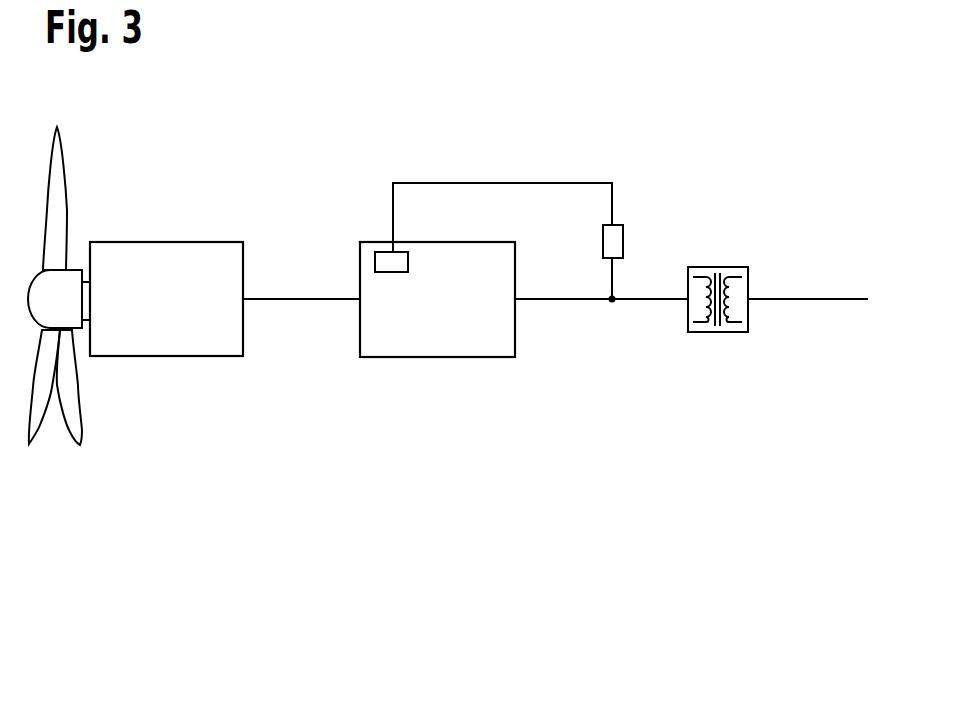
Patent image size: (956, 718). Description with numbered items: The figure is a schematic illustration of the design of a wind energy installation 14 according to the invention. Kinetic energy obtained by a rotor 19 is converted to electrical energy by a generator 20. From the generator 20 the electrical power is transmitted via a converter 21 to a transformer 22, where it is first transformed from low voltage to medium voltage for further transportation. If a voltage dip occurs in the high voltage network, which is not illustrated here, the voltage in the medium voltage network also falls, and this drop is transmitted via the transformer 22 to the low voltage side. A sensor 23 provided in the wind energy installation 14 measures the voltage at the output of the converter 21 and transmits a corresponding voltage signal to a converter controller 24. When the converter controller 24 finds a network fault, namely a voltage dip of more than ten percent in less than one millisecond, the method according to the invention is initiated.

The wind energy installation 14 is at (652, 356).
The rotor 19 is at (37, 407).
The generator 20 is at (167, 356).
The converter 21 is at (448, 357).
The transformer 22 is at (716, 267).
The sensor 23 is at (615, 225).
The converter controller 24 is at (383, 252).